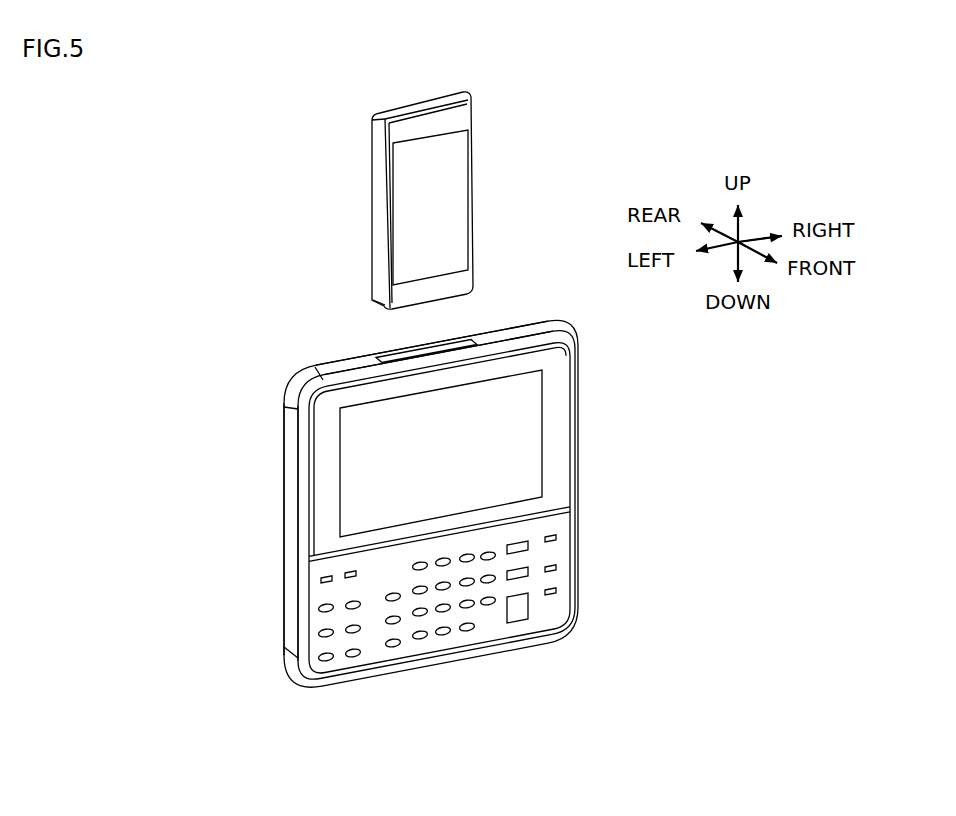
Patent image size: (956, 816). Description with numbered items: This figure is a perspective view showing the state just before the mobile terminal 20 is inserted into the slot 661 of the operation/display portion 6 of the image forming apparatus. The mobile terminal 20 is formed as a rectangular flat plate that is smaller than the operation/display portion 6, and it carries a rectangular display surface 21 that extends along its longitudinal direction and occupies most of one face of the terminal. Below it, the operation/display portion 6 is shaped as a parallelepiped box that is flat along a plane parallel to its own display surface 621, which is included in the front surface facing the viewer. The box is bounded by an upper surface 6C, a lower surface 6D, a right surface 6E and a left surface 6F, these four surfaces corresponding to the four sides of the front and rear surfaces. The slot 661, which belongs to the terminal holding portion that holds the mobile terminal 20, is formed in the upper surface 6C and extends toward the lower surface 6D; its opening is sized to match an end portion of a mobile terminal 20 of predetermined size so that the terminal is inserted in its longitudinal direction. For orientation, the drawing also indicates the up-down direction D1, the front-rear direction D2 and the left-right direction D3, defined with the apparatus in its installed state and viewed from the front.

The mobile terminal 20 is at (370, 97).
The display surface 21 is at (437, 178).
The operation/display portion 6 is at (296, 351).
The upper surface 6C is at (350, 362).
The slot 661 is at (461, 325).
The right surface 6E is at (577, 477).
The display surface 621 is at (510, 425).
The left surface 6F is at (290, 523).
The lower surface 6D is at (432, 663).
The up-down direction D1 is at (737, 222).
The front-rear direction D2 is at (757, 253).
The left-right direction D3 is at (762, 236).